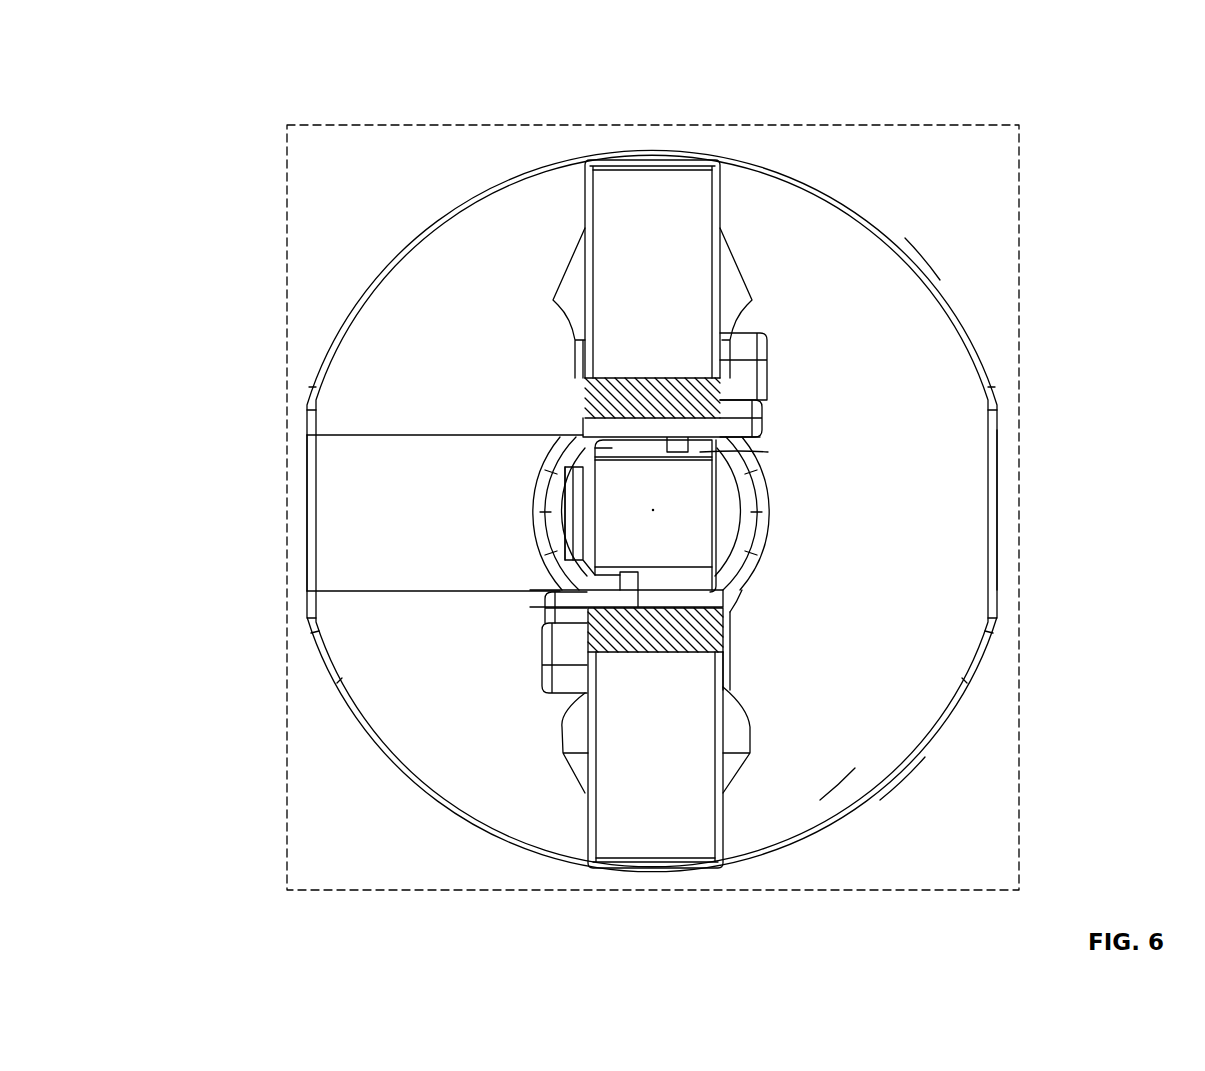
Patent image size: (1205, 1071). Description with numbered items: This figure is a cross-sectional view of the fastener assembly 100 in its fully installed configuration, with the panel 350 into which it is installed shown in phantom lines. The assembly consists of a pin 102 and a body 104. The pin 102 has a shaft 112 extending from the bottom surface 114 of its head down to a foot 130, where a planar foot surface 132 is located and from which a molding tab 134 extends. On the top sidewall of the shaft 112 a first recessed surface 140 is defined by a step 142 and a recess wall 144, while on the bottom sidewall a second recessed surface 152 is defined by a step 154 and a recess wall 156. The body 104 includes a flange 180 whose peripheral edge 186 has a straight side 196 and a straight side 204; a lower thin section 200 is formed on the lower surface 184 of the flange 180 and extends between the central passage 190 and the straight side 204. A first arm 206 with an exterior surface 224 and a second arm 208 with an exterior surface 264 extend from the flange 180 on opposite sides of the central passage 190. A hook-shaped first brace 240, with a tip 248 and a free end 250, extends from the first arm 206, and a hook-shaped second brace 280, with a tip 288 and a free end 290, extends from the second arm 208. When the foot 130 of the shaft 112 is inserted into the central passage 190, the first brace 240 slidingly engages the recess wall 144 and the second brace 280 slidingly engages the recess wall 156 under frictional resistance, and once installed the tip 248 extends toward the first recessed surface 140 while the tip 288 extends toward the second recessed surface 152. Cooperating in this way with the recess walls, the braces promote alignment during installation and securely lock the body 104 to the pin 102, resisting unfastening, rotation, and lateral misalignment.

The fastener assembly 100 is at (226, 62).
The panel 350 is at (370, 125).
The exterior surface 224 is at (692, 172).
The first arm 206 is at (652, 269).
The peripheral edge 186 is at (905, 238).
The first brace 240 is at (768, 355).
The step 142 is at (545, 442).
The free end 250 is at (768, 425).
The first recessed surface 140 is at (560, 465).
The molding tab 134 is at (545, 470).
The recess wall 144 is at (782, 428).
The tip 248 is at (768, 450).
The foot 130 is at (781, 480).
The pin 102 is at (558, 500).
The bottom surface 114 is at (778, 510).
The shaft 112 is at (740, 541).
The lower thin section 200 is at (445, 513).
The foot surface 132 is at (655, 516).
The tip 288 is at (628, 577).
The recess wall 156 is at (600, 592).
The central passage 190 is at (765, 522).
The step 154 is at (735, 598).
The second recessed surface 152 is at (683, 612).
The free end 290 is at (546, 618).
The second brace 280 is at (555, 645).
The second arm 208 is at (655, 760).
The body 104 is at (960, 695).
The flange 180 is at (925, 757).
The lower surface 184 is at (855, 768).
The exterior surface 264 is at (690, 850).
The straight side 204 is at (307, 495).
The straight side 196 is at (1000, 480).